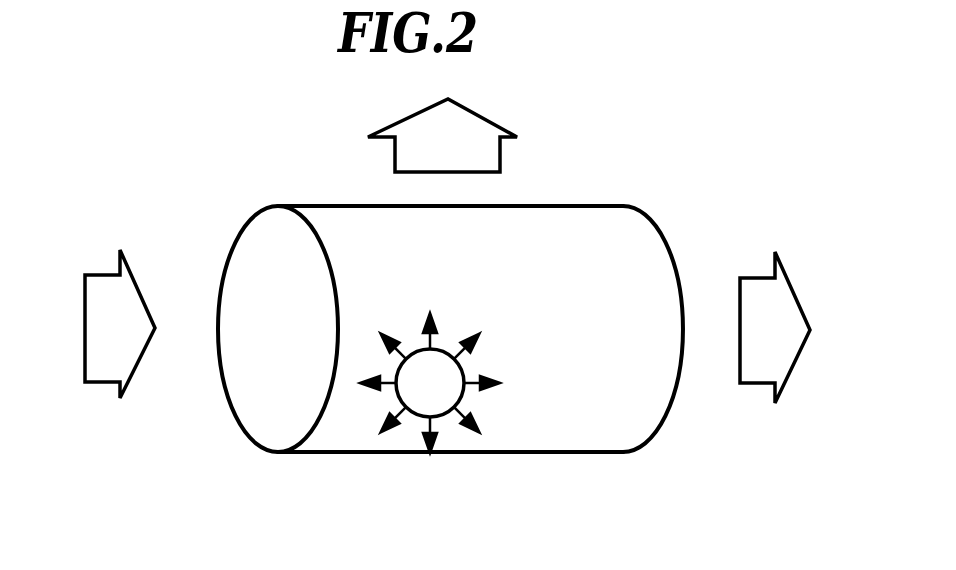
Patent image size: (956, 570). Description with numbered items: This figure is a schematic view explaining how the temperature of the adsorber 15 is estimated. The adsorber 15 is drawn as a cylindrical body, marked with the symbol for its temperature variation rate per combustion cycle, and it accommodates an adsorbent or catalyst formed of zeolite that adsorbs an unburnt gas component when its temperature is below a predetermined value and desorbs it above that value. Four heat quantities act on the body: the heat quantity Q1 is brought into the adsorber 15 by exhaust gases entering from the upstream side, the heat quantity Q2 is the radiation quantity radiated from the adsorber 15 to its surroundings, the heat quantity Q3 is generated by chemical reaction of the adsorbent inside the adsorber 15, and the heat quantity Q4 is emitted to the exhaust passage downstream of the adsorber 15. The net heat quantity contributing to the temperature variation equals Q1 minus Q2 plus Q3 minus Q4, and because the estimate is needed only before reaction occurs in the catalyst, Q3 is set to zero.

The adsorber 15 is at (605, 206).
The heat quantity brought into the adsorber by exhaust gases Q1 is at (120, 324).
The heat quantity radiated from the adsorber Q2 is at (442, 135).
The heat quantity generated by chemical reaction of the adsorbent Q3 is at (430, 383).
The heat quantity emitted to the exhaust passage downstream of the adsorber Q4 is at (775, 327).